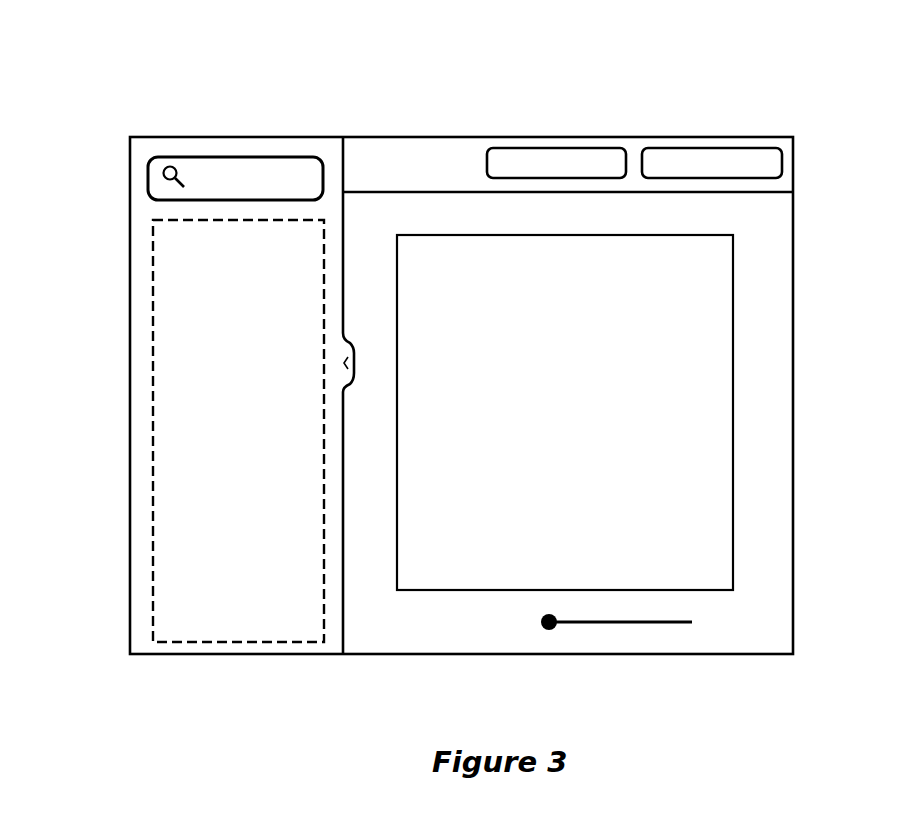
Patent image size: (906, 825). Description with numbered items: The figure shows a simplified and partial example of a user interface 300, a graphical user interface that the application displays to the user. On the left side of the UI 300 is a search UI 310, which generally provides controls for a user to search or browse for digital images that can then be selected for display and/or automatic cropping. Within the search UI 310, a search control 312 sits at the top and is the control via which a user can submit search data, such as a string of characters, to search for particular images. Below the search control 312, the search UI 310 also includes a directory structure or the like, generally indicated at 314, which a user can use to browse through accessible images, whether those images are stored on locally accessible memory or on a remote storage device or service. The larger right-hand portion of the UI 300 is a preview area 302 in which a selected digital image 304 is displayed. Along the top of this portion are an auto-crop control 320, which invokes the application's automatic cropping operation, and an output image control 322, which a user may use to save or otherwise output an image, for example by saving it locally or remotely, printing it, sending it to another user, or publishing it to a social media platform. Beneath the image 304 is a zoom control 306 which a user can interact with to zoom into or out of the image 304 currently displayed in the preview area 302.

The user interface 300 is at (126, 86).
The search UI 310 is at (107, 348).
The search control 312 is at (318, 188).
The directory structure 314 is at (257, 441).
The auto-crop control 320 is at (575, 175).
The output image control 322 is at (731, 175).
The preview area 302 is at (776, 215).
The digital image 304 is at (729, 265).
The zoom control 306 is at (643, 623).